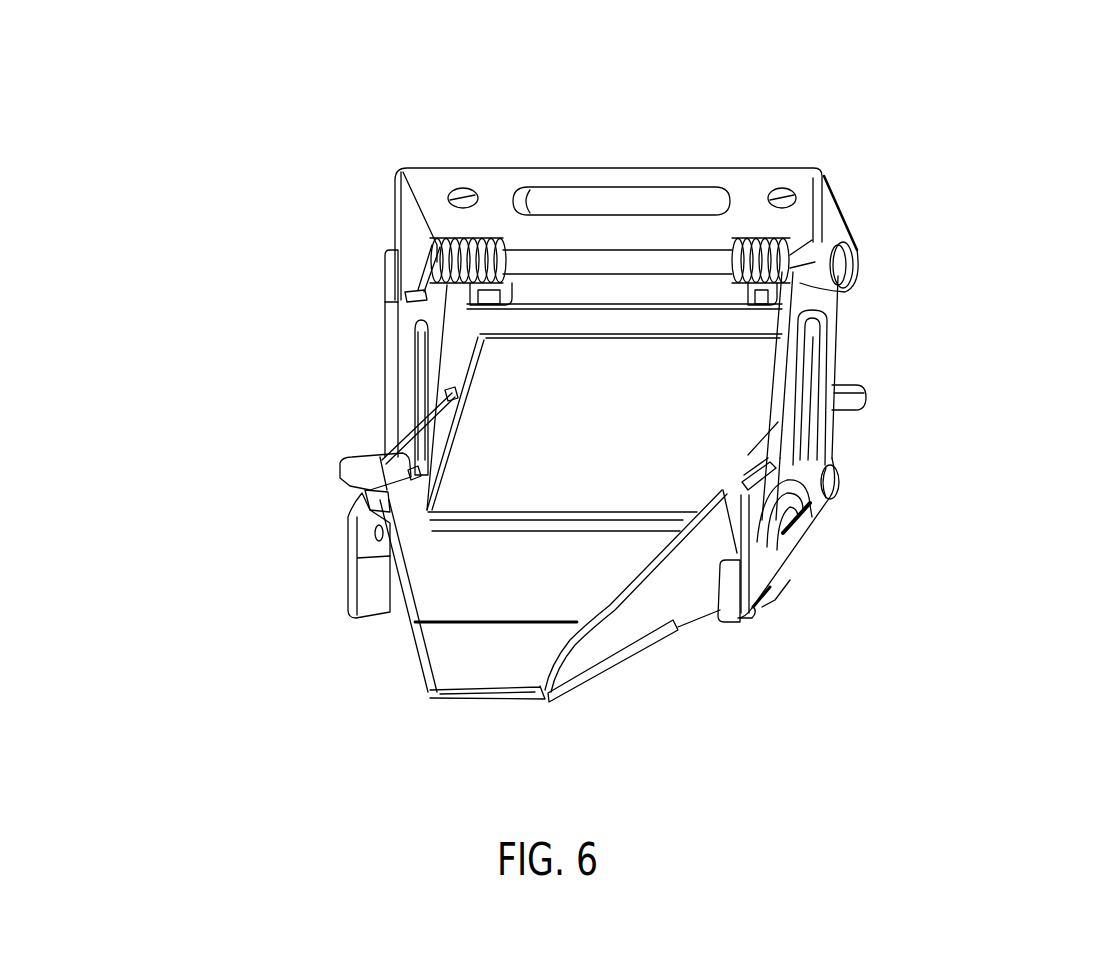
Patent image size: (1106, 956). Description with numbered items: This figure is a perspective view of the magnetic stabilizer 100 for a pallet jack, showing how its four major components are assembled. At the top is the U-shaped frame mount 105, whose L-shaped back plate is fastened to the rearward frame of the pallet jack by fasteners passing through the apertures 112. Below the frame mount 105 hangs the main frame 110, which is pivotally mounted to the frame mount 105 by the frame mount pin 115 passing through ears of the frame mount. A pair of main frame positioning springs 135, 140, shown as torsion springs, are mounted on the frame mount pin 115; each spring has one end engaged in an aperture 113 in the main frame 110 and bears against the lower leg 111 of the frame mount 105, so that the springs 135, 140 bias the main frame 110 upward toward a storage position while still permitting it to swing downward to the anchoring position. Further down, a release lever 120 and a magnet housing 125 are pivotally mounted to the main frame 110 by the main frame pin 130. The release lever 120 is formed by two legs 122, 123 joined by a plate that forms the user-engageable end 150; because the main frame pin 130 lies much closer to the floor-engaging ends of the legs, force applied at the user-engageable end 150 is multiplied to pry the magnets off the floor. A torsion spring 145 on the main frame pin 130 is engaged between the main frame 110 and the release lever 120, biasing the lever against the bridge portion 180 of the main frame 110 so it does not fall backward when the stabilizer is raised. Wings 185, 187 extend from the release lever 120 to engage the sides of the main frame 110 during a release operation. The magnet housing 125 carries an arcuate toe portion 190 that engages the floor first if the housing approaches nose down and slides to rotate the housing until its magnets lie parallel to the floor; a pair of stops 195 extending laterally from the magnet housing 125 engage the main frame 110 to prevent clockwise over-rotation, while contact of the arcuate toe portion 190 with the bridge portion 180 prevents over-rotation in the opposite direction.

The magnetic stabilizer 100 is at (975, 238).
The frame mount 105 is at (650, 165).
The main frame 110 is at (765, 565).
The lower leg 111 is at (553, 290).
The apertures 112 is at (460, 190).
The aperture 113 is at (392, 298).
The frame mount pin 115 is at (847, 262).
The release lever 120 is at (600, 643).
The leg 122 is at (735, 508).
The leg 123 is at (418, 479).
The magnet housing 125 is at (455, 498).
The main frame pin 130 is at (833, 480).
The main frame positioning spring 135 is at (743, 240).
The main frame positioning spring 140 is at (482, 242).
The torsion spring 145 is at (378, 443).
The user-engageable end 150 is at (490, 690).
The bridge portion 180 is at (731, 618).
The wing 185 is at (342, 460).
The wing 187 is at (740, 477).
The arcuate toe portion 190 is at (768, 603).
The stops 195 is at (868, 396).